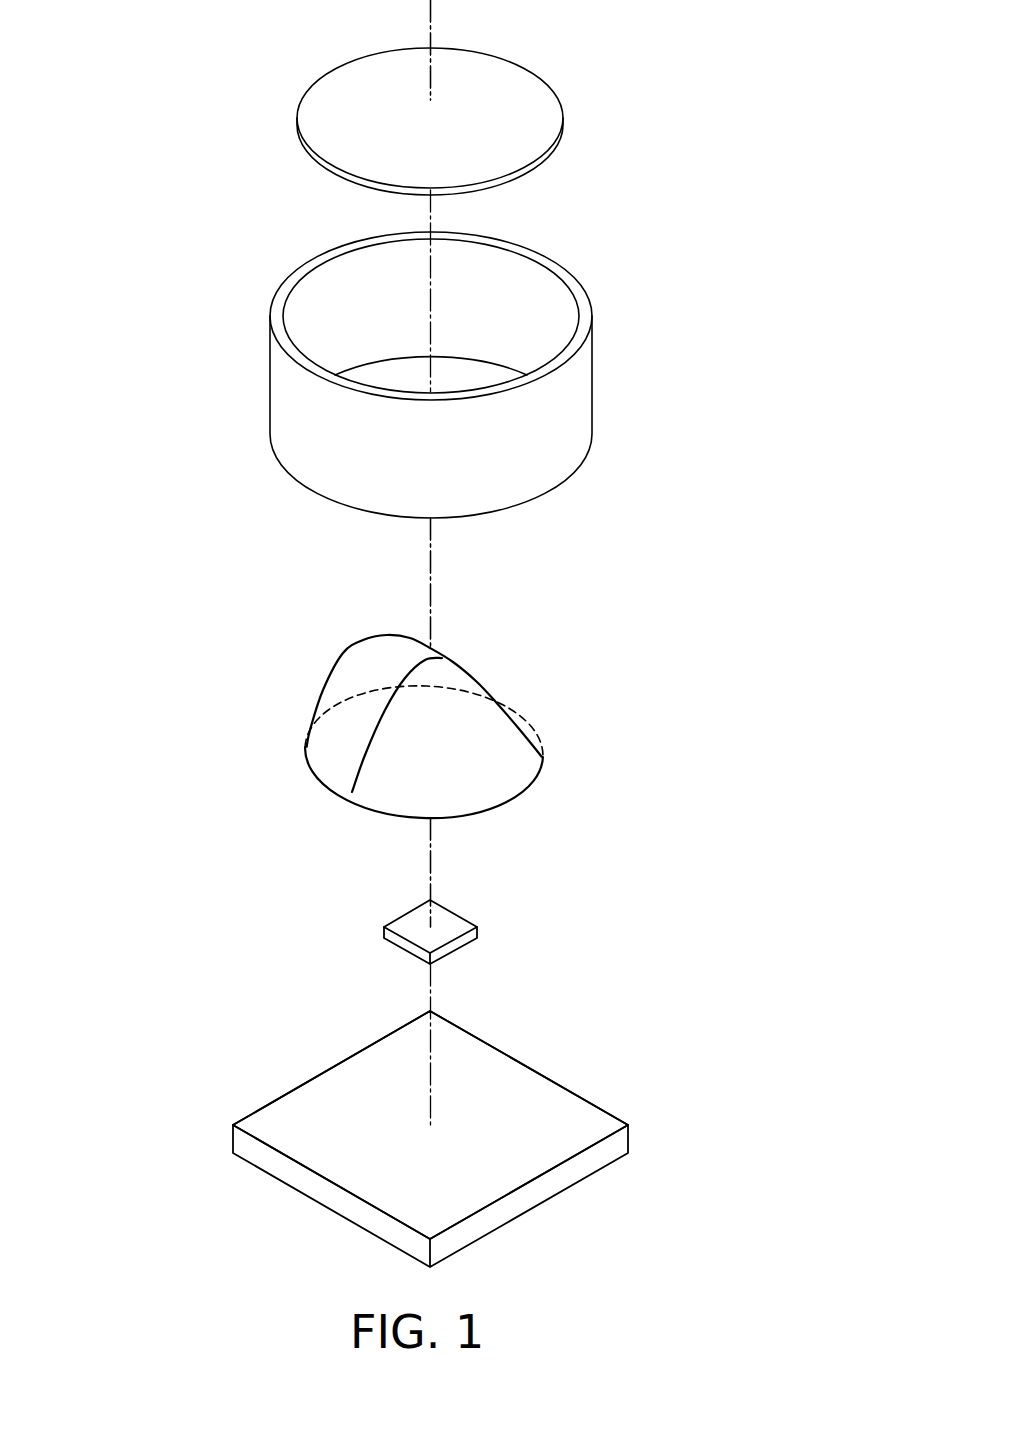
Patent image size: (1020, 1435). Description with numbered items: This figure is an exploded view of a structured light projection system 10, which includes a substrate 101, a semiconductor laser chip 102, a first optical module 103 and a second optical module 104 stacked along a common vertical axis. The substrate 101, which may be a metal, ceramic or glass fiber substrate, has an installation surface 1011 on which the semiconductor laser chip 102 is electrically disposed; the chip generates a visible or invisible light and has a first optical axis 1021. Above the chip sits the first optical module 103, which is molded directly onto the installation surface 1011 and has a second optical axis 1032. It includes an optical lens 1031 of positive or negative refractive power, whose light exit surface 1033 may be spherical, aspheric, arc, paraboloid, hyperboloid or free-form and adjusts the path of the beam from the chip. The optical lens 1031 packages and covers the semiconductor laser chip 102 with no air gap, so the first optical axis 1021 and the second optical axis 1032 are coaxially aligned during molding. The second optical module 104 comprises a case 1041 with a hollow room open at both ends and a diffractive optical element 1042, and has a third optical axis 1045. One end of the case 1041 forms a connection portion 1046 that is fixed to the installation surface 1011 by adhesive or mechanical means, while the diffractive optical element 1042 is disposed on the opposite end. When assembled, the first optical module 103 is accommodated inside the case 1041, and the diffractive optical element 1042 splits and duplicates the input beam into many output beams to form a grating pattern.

The structured light projection system 10 is at (690, 1212).
The substrate 101 is at (532, 1065).
The installation surface 1011 is at (342, 1095).
The semiconductor laser chip 102 is at (455, 911).
The first optical axis 1021 is at (430, 863).
The first optical module 103 is at (190, 595).
The optical lens 1031 is at (347, 718).
The second optical axis 1032 is at (430, 608).
The light exit surface 1033 is at (343, 653).
The second optical module 104 is at (680, 70).
The case 1041 is at (551, 269).
The diffractive optical element 1042 is at (533, 101).
The third optical axis 1045 is at (430, 12).
The connection portion 1046 is at (565, 481).